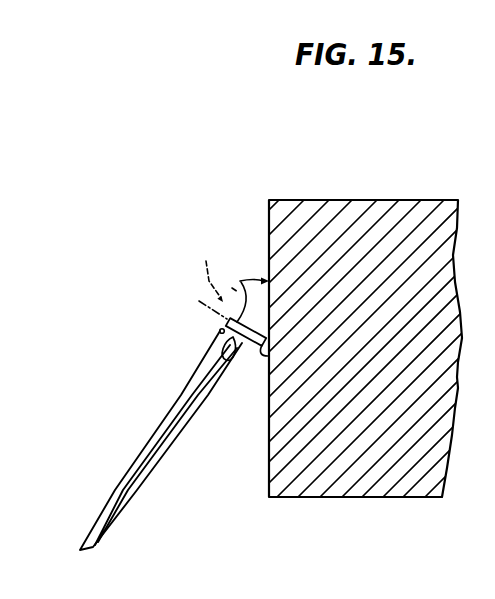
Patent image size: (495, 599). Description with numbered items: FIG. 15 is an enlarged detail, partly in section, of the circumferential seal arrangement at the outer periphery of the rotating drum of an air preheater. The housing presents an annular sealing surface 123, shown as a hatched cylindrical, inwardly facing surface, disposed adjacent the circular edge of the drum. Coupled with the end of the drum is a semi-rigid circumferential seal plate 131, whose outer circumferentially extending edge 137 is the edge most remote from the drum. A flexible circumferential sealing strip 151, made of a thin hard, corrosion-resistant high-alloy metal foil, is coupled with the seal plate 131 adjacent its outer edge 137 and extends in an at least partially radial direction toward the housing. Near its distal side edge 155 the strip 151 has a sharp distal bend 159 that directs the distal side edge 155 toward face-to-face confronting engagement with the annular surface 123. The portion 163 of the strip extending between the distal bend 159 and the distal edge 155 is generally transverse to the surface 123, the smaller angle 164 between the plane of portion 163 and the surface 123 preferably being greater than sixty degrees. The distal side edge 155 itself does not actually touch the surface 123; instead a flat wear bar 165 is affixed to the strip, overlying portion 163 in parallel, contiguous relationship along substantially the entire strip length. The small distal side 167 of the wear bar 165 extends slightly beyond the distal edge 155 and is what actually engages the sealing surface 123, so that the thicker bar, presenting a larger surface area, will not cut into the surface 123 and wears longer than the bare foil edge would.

The annular sealing surface 123 is at (268, 455).
The circumferential seal plate 131 is at (172, 428).
The outer circumferentially extending edge 137 is at (245, 356).
The circumferential sealing strip 151 is at (181, 397).
The distal side edge 155 is at (270, 349).
The distal bend 159 is at (199, 301).
The portion of the circumferential sealing strip 163 is at (219, 332).
The smaller angle 164 is at (215, 269).
The flat wear bar 165 is at (251, 290).
The small distal side of wear bar 167 is at (268, 342).